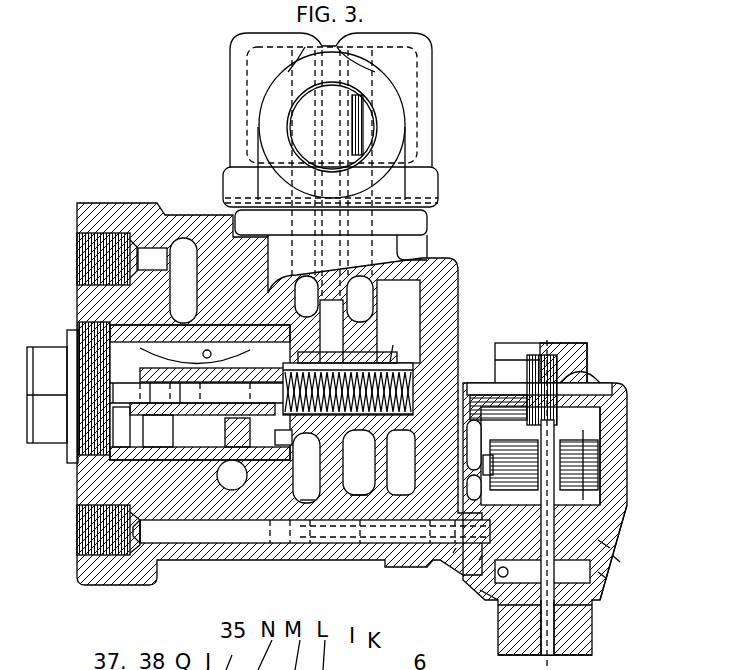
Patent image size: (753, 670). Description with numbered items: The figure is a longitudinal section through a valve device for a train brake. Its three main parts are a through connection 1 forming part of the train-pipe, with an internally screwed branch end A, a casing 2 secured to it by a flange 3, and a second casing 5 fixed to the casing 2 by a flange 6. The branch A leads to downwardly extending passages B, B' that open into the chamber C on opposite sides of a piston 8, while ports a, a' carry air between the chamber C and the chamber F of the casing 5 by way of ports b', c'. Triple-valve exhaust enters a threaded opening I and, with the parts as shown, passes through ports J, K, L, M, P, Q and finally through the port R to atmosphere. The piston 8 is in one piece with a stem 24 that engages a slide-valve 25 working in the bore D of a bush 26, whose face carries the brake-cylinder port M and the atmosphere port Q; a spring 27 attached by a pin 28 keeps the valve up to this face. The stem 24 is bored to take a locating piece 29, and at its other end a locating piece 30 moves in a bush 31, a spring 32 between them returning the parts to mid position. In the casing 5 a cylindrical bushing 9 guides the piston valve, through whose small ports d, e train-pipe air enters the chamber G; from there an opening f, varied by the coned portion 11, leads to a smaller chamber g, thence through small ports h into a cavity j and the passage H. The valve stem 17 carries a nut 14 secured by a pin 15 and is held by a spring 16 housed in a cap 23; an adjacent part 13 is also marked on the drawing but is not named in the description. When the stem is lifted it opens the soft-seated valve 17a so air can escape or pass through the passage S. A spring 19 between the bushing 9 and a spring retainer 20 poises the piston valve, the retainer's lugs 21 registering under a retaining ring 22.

The through connection 1 is at (420, 113).
The branch end A is at (372, 133).
The flange 3 is at (418, 227).
The casing 2 is at (250, 292).
The flange 6 is at (445, 307).
The threaded opening I is at (88, 258).
The port or passage J is at (152, 259).
The port or passage K is at (183, 280).
The port or passage L is at (178, 470).
The bush 26 is at (107, 327).
The pin 28 is at (207, 350).
The bore D is at (122, 398).
The locating piece 29 is at (123, 394).
The spring 27 is at (158, 394).
The slide-valve 25 is at (185, 394).
The stem 24 is at (250, 383).
The port or passage R is at (232, 475).
The passage B' is at (306, 296).
The passage B is at (360, 299).
The chamber C is at (398, 321).
The bush 31 is at (398, 342).
The spring 32 is at (372, 362).
The port or passage P is at (283, 437).
The exhaust port Q is at (306, 468).
The port or passage a' is at (306, 484).
The piston 8 is at (359, 462).
The port or passage a is at (359, 482).
The locating piece 30 is at (401, 462).
The port M is at (153, 531).
The passage H is at (220, 540).
The casing 5 is at (626, 423).
The spring 16 is at (586, 350).
The cap 23 is at (505, 345).
The nut 14 is at (573, 405).
The pin 15 is at (586, 372).
The adjusting screw 13 is at (628, 447).
The retaining ring 22 is at (612, 472).
The cylindrical bushing 9 is at (600, 478).
The spring 19 is at (583, 485).
The lugs 21 is at (612, 500).
The chamber G is at (590, 515).
The coned portion 11 is at (622, 528).
The chamber g is at (606, 545).
The small ports h is at (616, 560).
The cavity j is at (602, 575).
The chamber F is at (603, 600).
The soft-seated valve 17a is at (580, 615).
The passage S is at (540, 636).
The valve stem 17 is at (498, 556).
The port b' is at (439, 588).
The port c' is at (467, 591).
The spring retainer 20 is at (488, 462).
The small port e is at (474, 445).
The opening f is at (474, 486).
The small port d is at (618, 403).